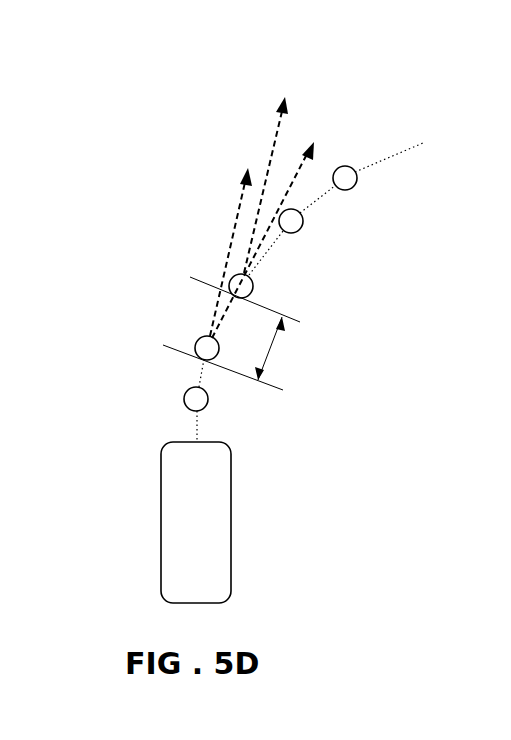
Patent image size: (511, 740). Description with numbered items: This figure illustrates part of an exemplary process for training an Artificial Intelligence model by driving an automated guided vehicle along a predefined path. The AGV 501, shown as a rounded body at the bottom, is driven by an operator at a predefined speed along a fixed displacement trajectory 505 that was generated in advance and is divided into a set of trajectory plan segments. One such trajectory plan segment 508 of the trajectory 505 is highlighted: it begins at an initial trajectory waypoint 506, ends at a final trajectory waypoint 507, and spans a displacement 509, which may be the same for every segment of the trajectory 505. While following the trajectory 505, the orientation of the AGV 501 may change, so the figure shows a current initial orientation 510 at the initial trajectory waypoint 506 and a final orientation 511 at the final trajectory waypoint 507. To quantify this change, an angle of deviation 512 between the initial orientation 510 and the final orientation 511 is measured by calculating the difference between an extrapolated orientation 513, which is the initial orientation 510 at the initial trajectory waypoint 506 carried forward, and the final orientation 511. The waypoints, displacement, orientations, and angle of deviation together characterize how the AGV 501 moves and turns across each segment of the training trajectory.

The AGV 501 is at (215, 532).
The trajectory 505 is at (400, 147).
The initial trajectory waypoint 506 is at (195, 343).
The final trajectory waypoint 507 is at (254, 283).
The trajectory plan segment 508 is at (172, 315).
The displacement 509 is at (268, 360).
The initial orientation 510 is at (233, 230).
The final orientation 511 is at (287, 193).
The angle of deviation 512 is at (270, 167).
The extrapolated orientation 513 is at (270, 149).